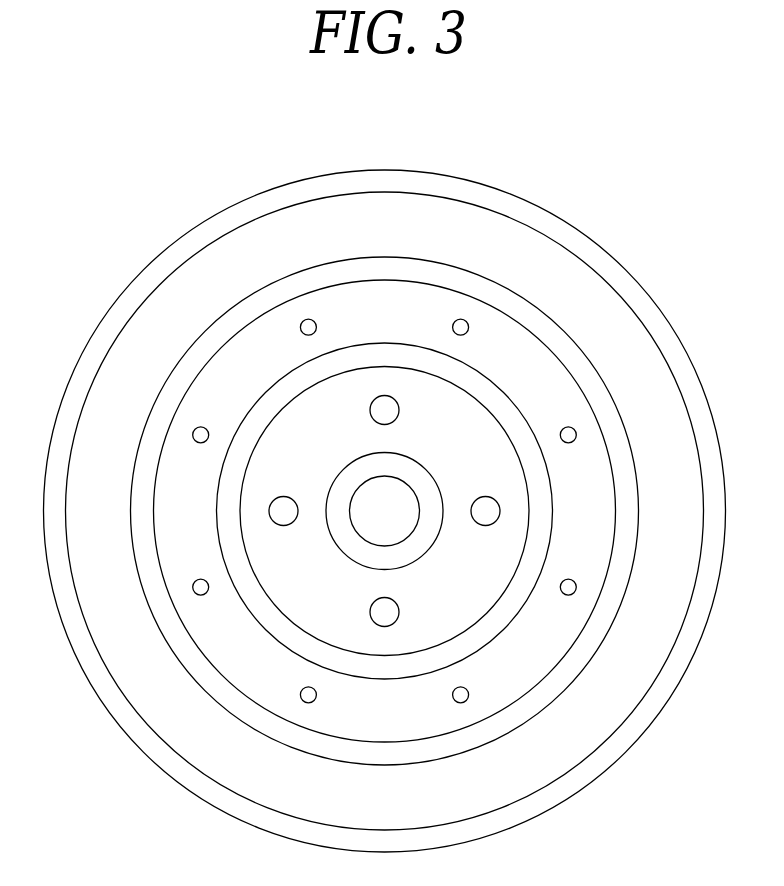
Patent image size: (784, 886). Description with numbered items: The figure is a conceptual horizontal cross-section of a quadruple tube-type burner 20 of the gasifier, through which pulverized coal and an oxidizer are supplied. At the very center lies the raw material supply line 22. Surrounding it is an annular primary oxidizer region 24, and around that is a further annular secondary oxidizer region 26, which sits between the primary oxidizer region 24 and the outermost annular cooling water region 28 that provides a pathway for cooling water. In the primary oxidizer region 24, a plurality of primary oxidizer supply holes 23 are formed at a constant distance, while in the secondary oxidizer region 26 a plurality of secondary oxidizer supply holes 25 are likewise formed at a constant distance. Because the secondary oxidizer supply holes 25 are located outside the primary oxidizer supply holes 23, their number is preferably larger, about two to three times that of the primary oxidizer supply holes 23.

The burner 20 is at (385, 498).
The raw material supply line 22 is at (410, 517).
The primary oxidizer supply holes 23 is at (399, 407).
The primary oxidizer region 24 is at (475, 595).
The secondary oxidizer supply holes 25 is at (316, 326).
The secondary oxidizer region 26 is at (502, 690).
The cooling water region 28 is at (615, 700).